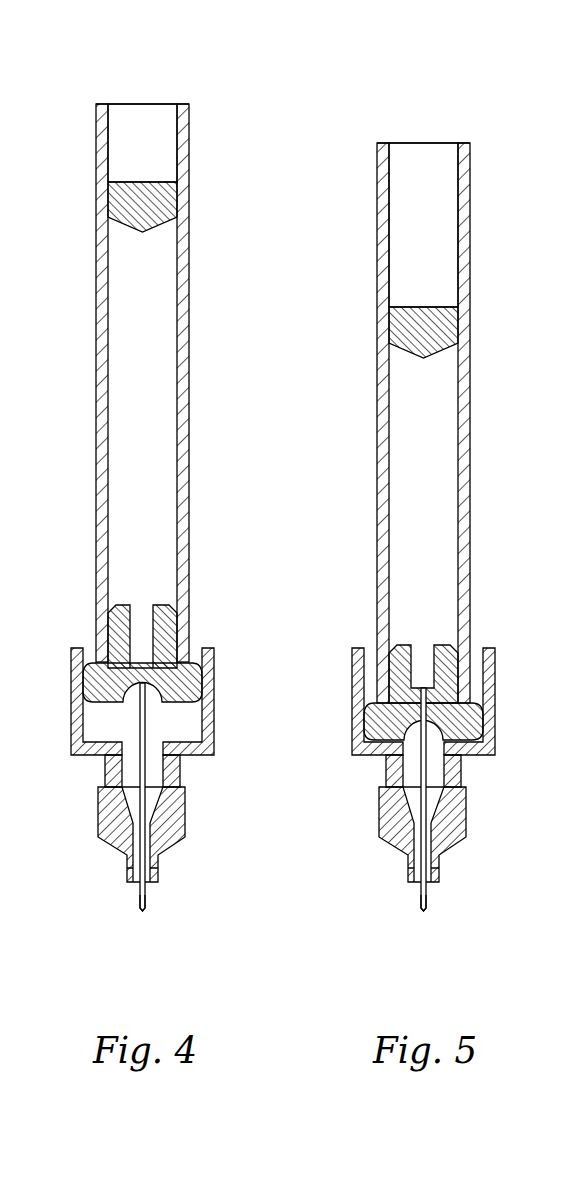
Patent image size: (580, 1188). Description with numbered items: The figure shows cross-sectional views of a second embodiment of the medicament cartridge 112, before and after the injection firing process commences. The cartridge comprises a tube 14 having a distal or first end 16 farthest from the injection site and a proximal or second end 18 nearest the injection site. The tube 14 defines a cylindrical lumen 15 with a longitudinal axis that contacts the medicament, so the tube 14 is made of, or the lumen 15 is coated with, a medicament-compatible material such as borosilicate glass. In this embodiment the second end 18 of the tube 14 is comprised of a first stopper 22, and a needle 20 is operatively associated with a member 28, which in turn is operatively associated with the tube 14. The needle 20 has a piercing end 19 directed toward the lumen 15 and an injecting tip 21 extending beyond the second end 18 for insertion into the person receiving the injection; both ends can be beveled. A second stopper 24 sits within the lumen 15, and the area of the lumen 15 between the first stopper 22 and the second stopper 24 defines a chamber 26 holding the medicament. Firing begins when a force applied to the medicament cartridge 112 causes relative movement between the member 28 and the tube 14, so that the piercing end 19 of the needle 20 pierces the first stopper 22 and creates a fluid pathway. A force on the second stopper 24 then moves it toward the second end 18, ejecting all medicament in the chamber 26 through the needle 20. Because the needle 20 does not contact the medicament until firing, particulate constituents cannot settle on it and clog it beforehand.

In FIG. 4, the tube 14 is at (135, 383).
In FIG. 5, the tube 14 is at (417, 423).
In FIG. 4, the lumen 15 is at (138, 117).
In FIG. 5, the lumen 15 is at (420, 153).
In FIG. 4, the distal or first end 16 is at (180, 103).
In FIG. 5, the distal or first end 16 is at (460, 143).
In FIG. 4, the proximal or second end 18 is at (213, 648).
In FIG. 5, the proximal or second end 18 is at (378, 702).
In FIG. 4, the piercing end 19 is at (160, 685).
In FIG. 5, the piercing end 19 is at (432, 688).
In FIG. 4, the needle 20 is at (147, 888).
In FIG. 5, the needle 20 is at (428, 888).
In FIG. 4, the injecting tip 21 is at (140, 907).
In FIG. 5, the injecting tip 21 is at (421, 907).
In FIG. 4, the first stopper 22 is at (165, 623).
In FIG. 5, the first stopper 22 is at (473, 717).
In FIG. 4, the second stopper 24 is at (112, 200).
In FIG. 5, the second stopper 24 is at (392, 325).
In FIG. 4, the chamber 26 is at (67, 383).
In FIG. 5, the chamber 26 is at (358, 360).
In FIG. 4, the member 28 is at (214, 743).
In FIG. 5, the member 28 is at (495, 743).
In FIG. 4, the medicament cartridge 112 is at (152, 468).
In FIG. 5, the medicament cartridge 112 is at (430, 487).